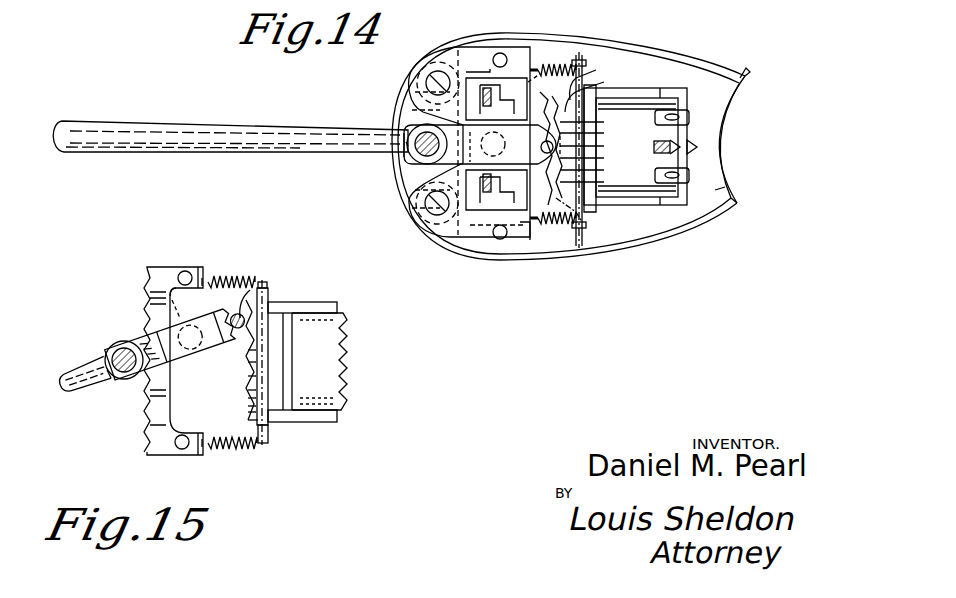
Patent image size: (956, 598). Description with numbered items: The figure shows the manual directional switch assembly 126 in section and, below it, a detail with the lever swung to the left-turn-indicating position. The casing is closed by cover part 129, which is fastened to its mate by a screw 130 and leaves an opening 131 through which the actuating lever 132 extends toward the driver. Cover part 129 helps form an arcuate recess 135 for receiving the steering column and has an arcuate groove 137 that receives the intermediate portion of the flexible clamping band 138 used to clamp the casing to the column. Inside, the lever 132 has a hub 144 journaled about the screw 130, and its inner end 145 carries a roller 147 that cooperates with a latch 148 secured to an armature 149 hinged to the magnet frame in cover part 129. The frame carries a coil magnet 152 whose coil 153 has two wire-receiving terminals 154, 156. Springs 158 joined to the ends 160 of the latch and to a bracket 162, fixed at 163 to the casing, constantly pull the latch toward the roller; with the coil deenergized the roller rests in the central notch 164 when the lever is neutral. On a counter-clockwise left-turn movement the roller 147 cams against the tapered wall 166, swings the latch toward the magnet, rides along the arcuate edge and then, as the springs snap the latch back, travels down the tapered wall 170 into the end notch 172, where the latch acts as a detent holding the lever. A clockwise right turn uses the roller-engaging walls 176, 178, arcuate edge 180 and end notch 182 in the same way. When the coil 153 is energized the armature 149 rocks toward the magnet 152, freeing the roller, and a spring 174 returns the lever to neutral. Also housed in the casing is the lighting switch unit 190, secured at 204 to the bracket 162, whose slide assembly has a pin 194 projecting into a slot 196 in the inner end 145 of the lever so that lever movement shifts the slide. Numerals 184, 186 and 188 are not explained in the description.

In FIG. 14, the manual directional switch assembly 126 is at (379, 95).
In FIG. 14, the cover part 129 is at (662, 50).
In FIG. 14, the screw 130 is at (412, 132).
In FIG. 15, the screw 130 is at (117, 344).
In FIG. 14, the opening 131 is at (403, 162).
In FIG. 14, the actuating lever 132 is at (227, 120).
In FIG. 15, the actuating lever 132 is at (86, 392).
In FIG. 14, the arcuate recess 135 is at (725, 115).
In FIG. 14, the arcuate groove 137 is at (733, 197).
In FIG. 14, the clamping band 138 is at (744, 69).
In FIG. 14, the hub 144 is at (415, 140).
In FIG. 15, the hub 144 is at (112, 356).
In FIG. 14, the inner end of the lever 145 is at (418, 164).
In FIG. 15, the inner end of the lever 145 is at (126, 341).
In FIG. 14, the roller 147 is at (538, 118).
In FIG. 15, the roller 147 is at (236, 312).
In FIG. 14, the latch 148 is at (598, 76).
In FIG. 15, the latch 148 is at (246, 420).
In FIG. 14, the armature 149 is at (594, 214).
In FIG. 15, the armature 149 is at (270, 292).
In FIG. 14, the coil magnet 152 is at (633, 107).
In FIG. 15, the coil magnet 152 is at (353, 315).
In FIG. 14, the coil 153 is at (700, 205).
In FIG. 15, the coil 153 is at (343, 356).
In FIG. 14, the wire-receiving terminal 154 is at (690, 118).
In FIG. 14, the wire-receiving terminal 156 is at (690, 176).
In FIG. 14, the springs 158 is at (550, 64).
In FIG. 15, the springs 158 is at (232, 278).
In FIG. 14, the ends of the latch 160 is at (584, 62).
In FIG. 15, the ends of the latch 160 is at (266, 282).
In FIG. 14, the bracket 162 is at (415, 86).
In FIG. 15, the bracket 162 is at (150, 268).
In FIG. 14, the fastening of bracket 163 is at (440, 74).
In FIG. 14, the central notch 164 is at (597, 146).
In FIG. 14, the tapered wall 166 is at (597, 134).
In FIG. 14, the tapered wall 170 is at (545, 139).
In FIG. 15, the tapered wall 170 is at (250, 338).
In FIG. 14, the end notch 172 is at (600, 89).
In FIG. 15, the end notch 172 is at (254, 288).
In FIG. 14, the spring 174 is at (482, 178).
In FIG. 14, the roller-engaging wall 176 is at (597, 158).
In FIG. 15, the roller-engaging wall 176 is at (244, 373).
In FIG. 14, the roller-engaging wall 178 is at (597, 181).
In FIG. 15, the roller-engaging wall 178 is at (250, 383).
In FIG. 14, the arcuate edge 180 is at (597, 169).
In FIG. 15, the arcuate edge 180 is at (254, 385).
In FIG. 14, the end notch 182 is at (583, 208).
In FIG. 15, the end notch 182 is at (246, 404).
In FIG. 15, the contact 184 is at (254, 372).
In FIG. 15, the contact 186 is at (254, 360).
In FIG. 14, the contact 188 is at (597, 123).
In FIG. 15, the contact 188 is at (250, 351).
In FIG. 14, the lighting switch unit 190 is at (530, 249).
In FIG. 14, the pin 194 is at (482, 86).
In FIG. 15, the pin 194 is at (208, 316).
In FIG. 14, the slot 196 is at (485, 78).
In FIG. 15, the slot 196 is at (170, 300).
In FIG. 14, the securing point 204 is at (503, 52).
In FIG. 15, the securing point 204 is at (187, 271).